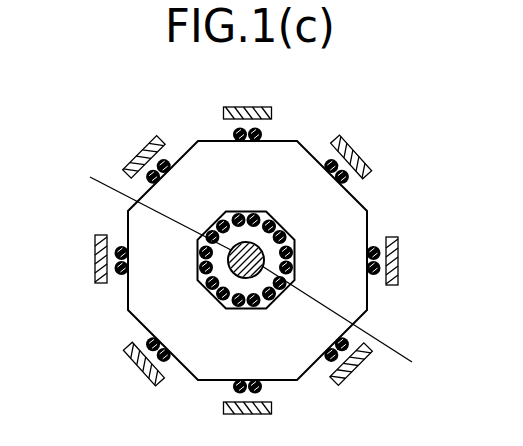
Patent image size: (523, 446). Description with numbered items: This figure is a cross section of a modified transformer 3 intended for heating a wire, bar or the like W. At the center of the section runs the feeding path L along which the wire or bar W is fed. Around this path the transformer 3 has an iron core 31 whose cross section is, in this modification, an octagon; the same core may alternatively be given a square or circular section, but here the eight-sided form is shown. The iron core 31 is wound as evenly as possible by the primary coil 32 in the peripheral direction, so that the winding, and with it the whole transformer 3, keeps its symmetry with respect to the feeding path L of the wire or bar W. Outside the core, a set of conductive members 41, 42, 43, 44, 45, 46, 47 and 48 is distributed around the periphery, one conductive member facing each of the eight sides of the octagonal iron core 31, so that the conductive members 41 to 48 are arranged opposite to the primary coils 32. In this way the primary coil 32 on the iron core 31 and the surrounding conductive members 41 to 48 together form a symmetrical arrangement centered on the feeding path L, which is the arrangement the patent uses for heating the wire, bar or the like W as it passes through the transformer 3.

The transformer 3 is at (182, 129).
The iron core 31 is at (365, 298).
The primary coil 32 is at (283, 229).
The conductive member 41 is at (272, 113).
The conductive member 42 is at (354, 152).
The conductive member 43 is at (398, 262).
The conductive member 44 is at (357, 367).
The conductive member 45 is at (271, 408).
The conductive member 46 is at (125, 359).
The conductive member 47 is at (95, 259).
The conductive member 48 is at (129, 160).
The feeding path L is at (149, 202).
The wire, bar or the like W is at (357, 325).